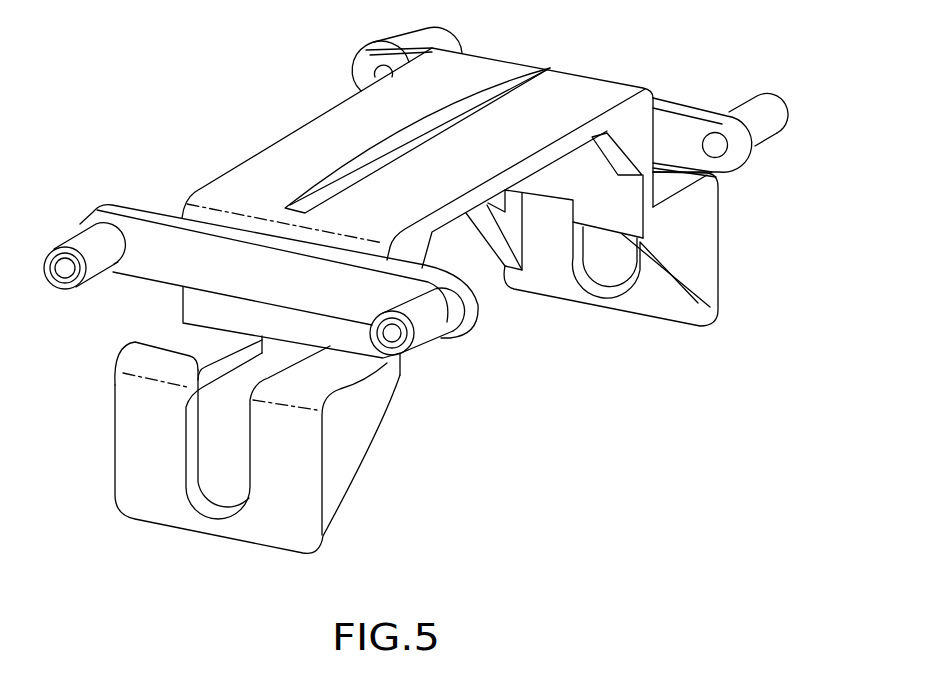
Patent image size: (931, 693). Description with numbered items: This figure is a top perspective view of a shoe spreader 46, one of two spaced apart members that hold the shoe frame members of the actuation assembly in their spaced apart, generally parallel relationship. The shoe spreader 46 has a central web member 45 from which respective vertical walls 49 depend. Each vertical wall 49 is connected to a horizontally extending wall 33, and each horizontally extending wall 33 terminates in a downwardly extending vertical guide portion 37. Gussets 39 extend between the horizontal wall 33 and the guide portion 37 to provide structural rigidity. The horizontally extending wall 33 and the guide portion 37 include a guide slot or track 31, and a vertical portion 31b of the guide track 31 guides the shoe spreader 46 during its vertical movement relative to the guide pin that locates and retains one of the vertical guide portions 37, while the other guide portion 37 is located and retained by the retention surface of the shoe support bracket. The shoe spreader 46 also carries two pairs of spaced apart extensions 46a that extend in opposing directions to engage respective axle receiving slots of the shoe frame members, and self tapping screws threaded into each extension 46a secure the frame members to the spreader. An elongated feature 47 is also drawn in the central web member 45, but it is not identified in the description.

The guide slot or track 31 is at (241, 454).
The vertical portion of guide track 31b is at (245, 483).
The horizontally extending wall 33 is at (180, 352).
The vertical guide portion 37 is at (142, 452).
The gusset 39 is at (342, 448).
The central web member 45 is at (363, 139).
The shoe spreader 46 is at (570, 93).
The extension 46a is at (410, 37).
The slot 47 is at (485, 80).
The vertical wall 49 is at (200, 303).